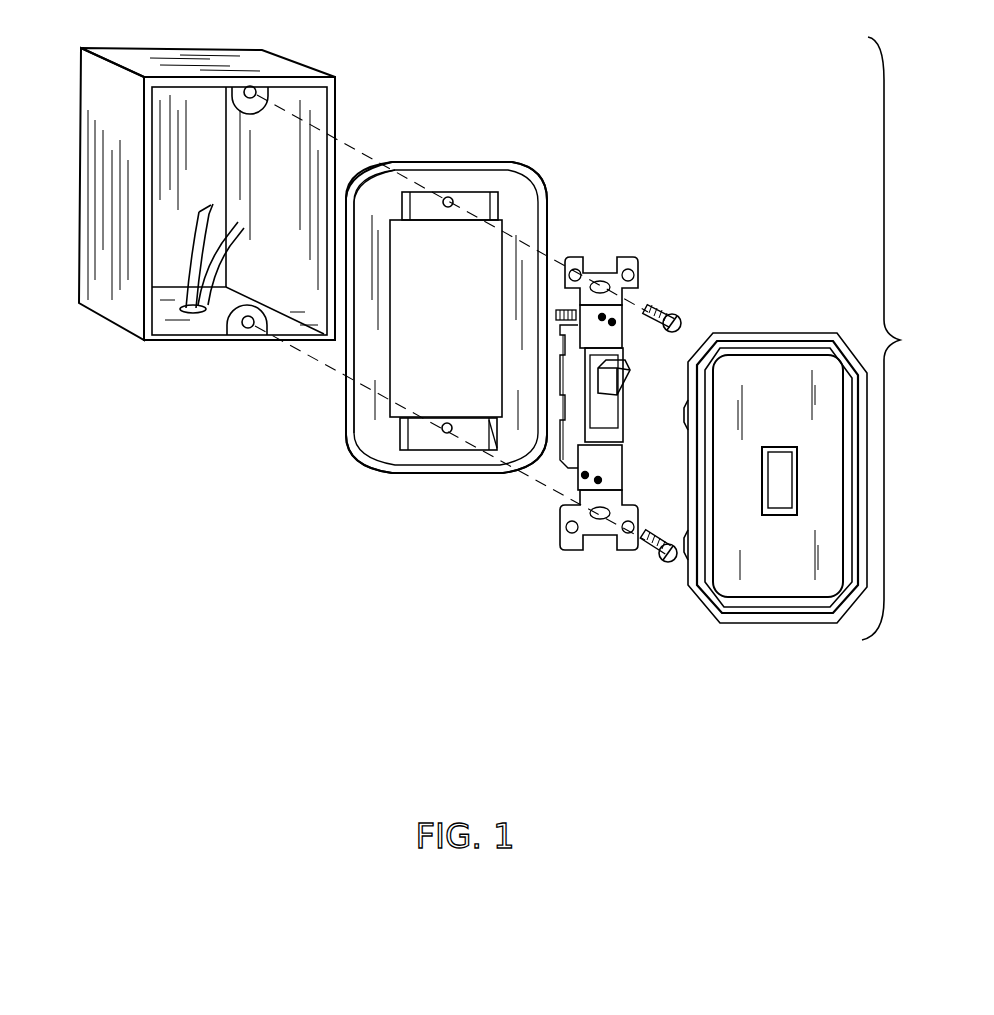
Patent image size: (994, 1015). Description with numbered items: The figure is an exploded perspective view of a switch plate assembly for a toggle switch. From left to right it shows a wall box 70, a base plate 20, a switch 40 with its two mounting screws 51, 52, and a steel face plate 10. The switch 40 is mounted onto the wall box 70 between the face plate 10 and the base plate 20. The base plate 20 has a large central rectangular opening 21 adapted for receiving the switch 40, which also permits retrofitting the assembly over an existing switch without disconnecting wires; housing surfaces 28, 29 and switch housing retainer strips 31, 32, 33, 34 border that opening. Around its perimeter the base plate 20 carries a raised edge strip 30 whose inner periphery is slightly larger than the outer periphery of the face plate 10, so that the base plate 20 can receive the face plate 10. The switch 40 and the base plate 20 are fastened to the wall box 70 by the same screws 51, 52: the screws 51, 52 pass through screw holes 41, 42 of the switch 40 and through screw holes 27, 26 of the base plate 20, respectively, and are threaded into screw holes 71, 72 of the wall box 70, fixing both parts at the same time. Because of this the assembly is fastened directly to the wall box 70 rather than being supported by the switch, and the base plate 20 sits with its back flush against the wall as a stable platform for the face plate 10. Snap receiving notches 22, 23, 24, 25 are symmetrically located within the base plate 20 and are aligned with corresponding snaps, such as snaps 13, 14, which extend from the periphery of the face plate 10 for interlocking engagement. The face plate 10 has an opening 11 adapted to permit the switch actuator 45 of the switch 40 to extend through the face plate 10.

The steel face plate 10 is at (760, 442).
The opening 11 is at (782, 484).
The snap bent from steel plate 13 is at (686, 418).
The snap bent from steel plate 14 is at (688, 545).
The base plate 20 is at (433, 287).
The opening 21 is at (446, 318).
The snap receiving notch 22 is at (363, 200).
The snap receiving notch 23 is at (358, 405).
The snap receiving notch 24 is at (530, 400).
The snap receiving notch 25 is at (538, 234).
The screw hole 26 is at (447, 433).
The screw hole 27 is at (448, 197).
The housing surface 28 is at (478, 206).
The housing surface 29 is at (430, 436).
The edge strip 30 is at (358, 340).
The switch housing retainer strip 31 is at (498, 213).
The switch housing retainer strip 32 is at (487, 444).
The switch housing retainer strip 33 is at (400, 437).
The switch housing retainer strip 34 is at (403, 182).
The switch 40 is at (615, 368).
The screw hole 41 is at (600, 281).
The screw hole 42 is at (600, 520).
The switch actuator 45 is at (630, 375).
The screw 51 is at (681, 316).
The screw 52 is at (661, 561).
The wall box 70 is at (207, 240).
The screw hole 71 is at (250, 86).
The screw hole 72 is at (248, 328).